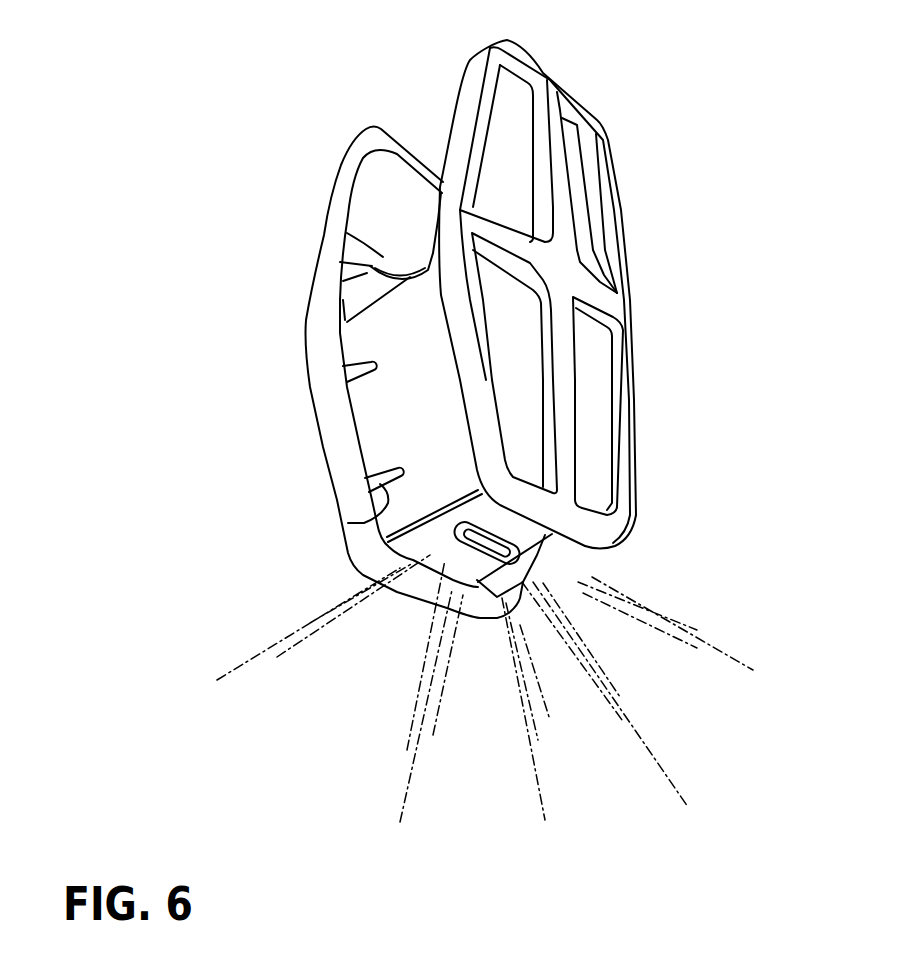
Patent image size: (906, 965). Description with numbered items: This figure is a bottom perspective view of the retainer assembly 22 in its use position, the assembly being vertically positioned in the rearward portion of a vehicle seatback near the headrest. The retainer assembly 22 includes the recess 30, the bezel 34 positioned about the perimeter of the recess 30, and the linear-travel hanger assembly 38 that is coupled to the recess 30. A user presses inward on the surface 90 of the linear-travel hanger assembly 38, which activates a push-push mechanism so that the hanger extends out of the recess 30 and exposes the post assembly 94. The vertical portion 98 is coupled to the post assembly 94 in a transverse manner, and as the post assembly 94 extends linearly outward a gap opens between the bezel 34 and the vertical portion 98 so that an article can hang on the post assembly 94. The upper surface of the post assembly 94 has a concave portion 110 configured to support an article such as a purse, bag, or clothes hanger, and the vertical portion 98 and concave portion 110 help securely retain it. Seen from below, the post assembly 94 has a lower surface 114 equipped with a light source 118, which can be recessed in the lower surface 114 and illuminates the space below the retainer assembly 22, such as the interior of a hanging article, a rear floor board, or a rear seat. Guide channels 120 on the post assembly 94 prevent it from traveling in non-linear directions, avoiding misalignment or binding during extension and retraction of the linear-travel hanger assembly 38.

The retainer assembly 22 is at (155, 245).
The recess 30 is at (383, 212).
The bezel 34 is at (333, 397).
The linear-travel hanger assembly 38 is at (404, 426).
The surface 90 is at (558, 267).
The post assembly 94 is at (346, 257).
The vertical portion 98 is at (611, 520).
The concave portion 110 is at (408, 262).
The lower surface 114 is at (540, 540).
The light source 118 is at (485, 545).
The guide channels 120 is at (357, 377).